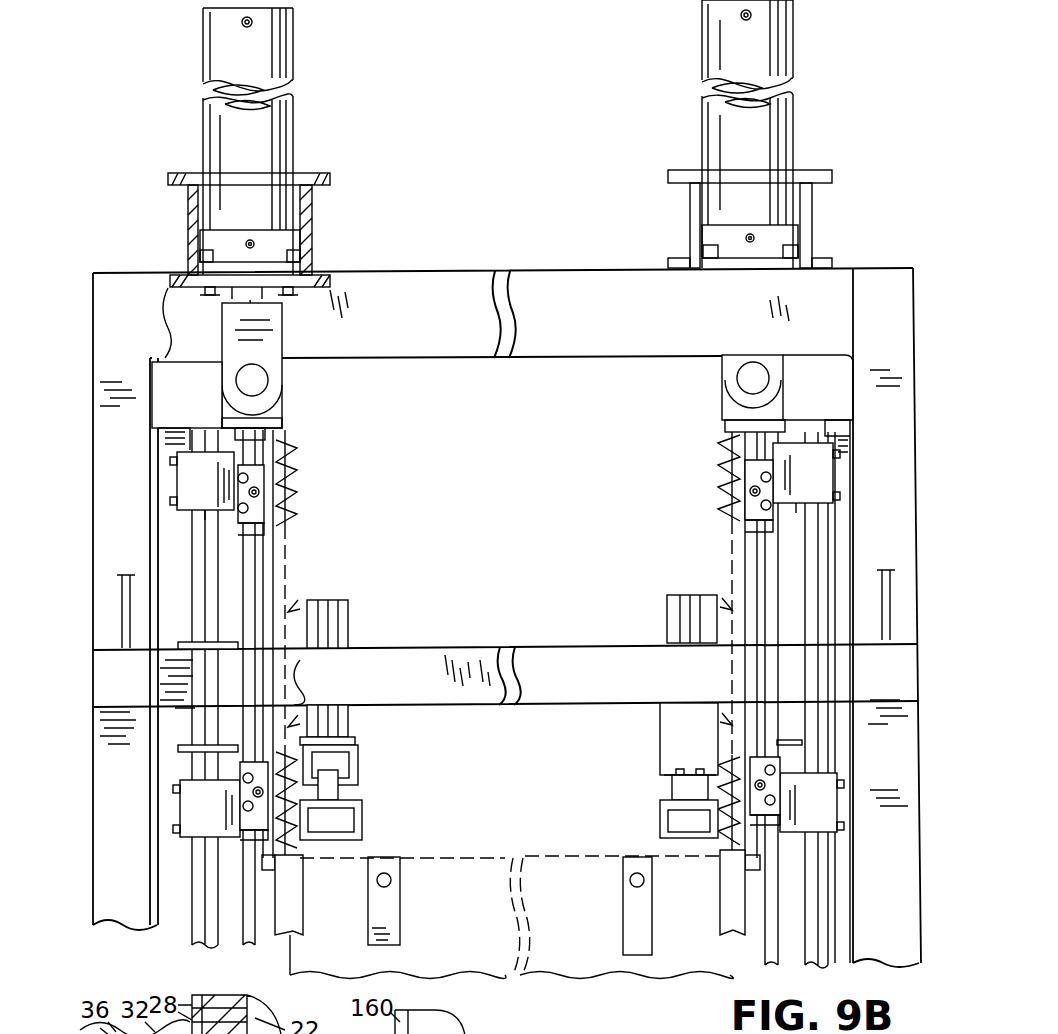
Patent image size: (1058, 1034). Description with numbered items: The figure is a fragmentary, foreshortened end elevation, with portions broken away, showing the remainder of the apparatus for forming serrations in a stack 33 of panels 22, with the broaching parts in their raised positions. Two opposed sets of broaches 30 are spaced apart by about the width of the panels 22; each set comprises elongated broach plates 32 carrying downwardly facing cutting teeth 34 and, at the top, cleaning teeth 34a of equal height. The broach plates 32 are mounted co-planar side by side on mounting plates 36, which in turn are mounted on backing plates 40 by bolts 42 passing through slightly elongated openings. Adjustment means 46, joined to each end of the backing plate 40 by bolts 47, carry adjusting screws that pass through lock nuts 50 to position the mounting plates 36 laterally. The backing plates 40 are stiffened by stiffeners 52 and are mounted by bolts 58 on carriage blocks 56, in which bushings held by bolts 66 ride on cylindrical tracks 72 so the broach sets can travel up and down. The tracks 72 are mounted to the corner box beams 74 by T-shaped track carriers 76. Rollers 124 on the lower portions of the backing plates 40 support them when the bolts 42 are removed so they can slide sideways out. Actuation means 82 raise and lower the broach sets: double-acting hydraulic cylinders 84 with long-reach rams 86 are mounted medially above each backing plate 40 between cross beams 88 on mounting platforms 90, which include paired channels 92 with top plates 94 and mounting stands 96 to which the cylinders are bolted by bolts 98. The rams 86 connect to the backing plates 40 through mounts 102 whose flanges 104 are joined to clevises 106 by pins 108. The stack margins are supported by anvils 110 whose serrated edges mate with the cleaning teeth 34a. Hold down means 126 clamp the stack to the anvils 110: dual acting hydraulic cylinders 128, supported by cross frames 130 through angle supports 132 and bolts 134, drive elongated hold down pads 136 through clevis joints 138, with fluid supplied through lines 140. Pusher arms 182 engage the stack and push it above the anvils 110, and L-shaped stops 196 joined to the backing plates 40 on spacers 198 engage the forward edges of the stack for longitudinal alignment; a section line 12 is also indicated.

The section line 12 is at (125, 494).
The panels 22 is at (536, 858).
The broaches 30 is at (318, 470).
The broach plates 32 is at (288, 440).
The stack 33 is at (556, 854).
The cutting teeth 34 is at (290, 828).
The cleaning teeth 34a is at (292, 496).
The mounting plates 36 is at (264, 556).
The backing plates 40 is at (248, 584).
The bolts 42 is at (235, 802).
The adjustment means 46 is at (262, 520).
The bolts 47 is at (507, 640).
The lock nuts 50 is at (250, 494).
The stiffeners 52 is at (180, 748).
The carriage blocks 56 is at (180, 481).
The bolts 58 is at (172, 462).
The bolts 66 is at (205, 512).
The tracks 72 is at (205, 590).
The box beams 74 is at (104, 379).
The track carriers 76 is at (167, 428).
The actuation means 82 is at (306, 95).
The hydraulic cylinders 84 is at (205, 116).
The rams 86 is at (240, 330).
The cross beams 88 is at (352, 300).
The mounting platforms 90 is at (667, 203).
The channels 92 is at (190, 232).
The top plates 94 is at (318, 180).
The mounting stands 96 is at (286, 241).
The bolts 98 is at (200, 254).
The mounts 102 is at (230, 426).
The flanges 104 is at (276, 405).
The clevises 106 is at (284, 366).
The pins 108 is at (258, 378).
The anvils 110 is at (241, 22).
The rollers 124 is at (270, 862).
The hold down means 126 is at (650, 764).
The hydraulic cylinders 128 is at (349, 608).
The cross frames 130 is at (536, 658).
The angle supports 132 is at (345, 780).
The bolts 134 is at (352, 738).
The hold down pad 136 is at (358, 818).
The clevis joint 138 is at (352, 758).
The lines 140 is at (300, 606).
The pusher arms 182 is at (400, 930).
The stops 196 is at (282, 936).
The spacers 198 is at (290, 880).